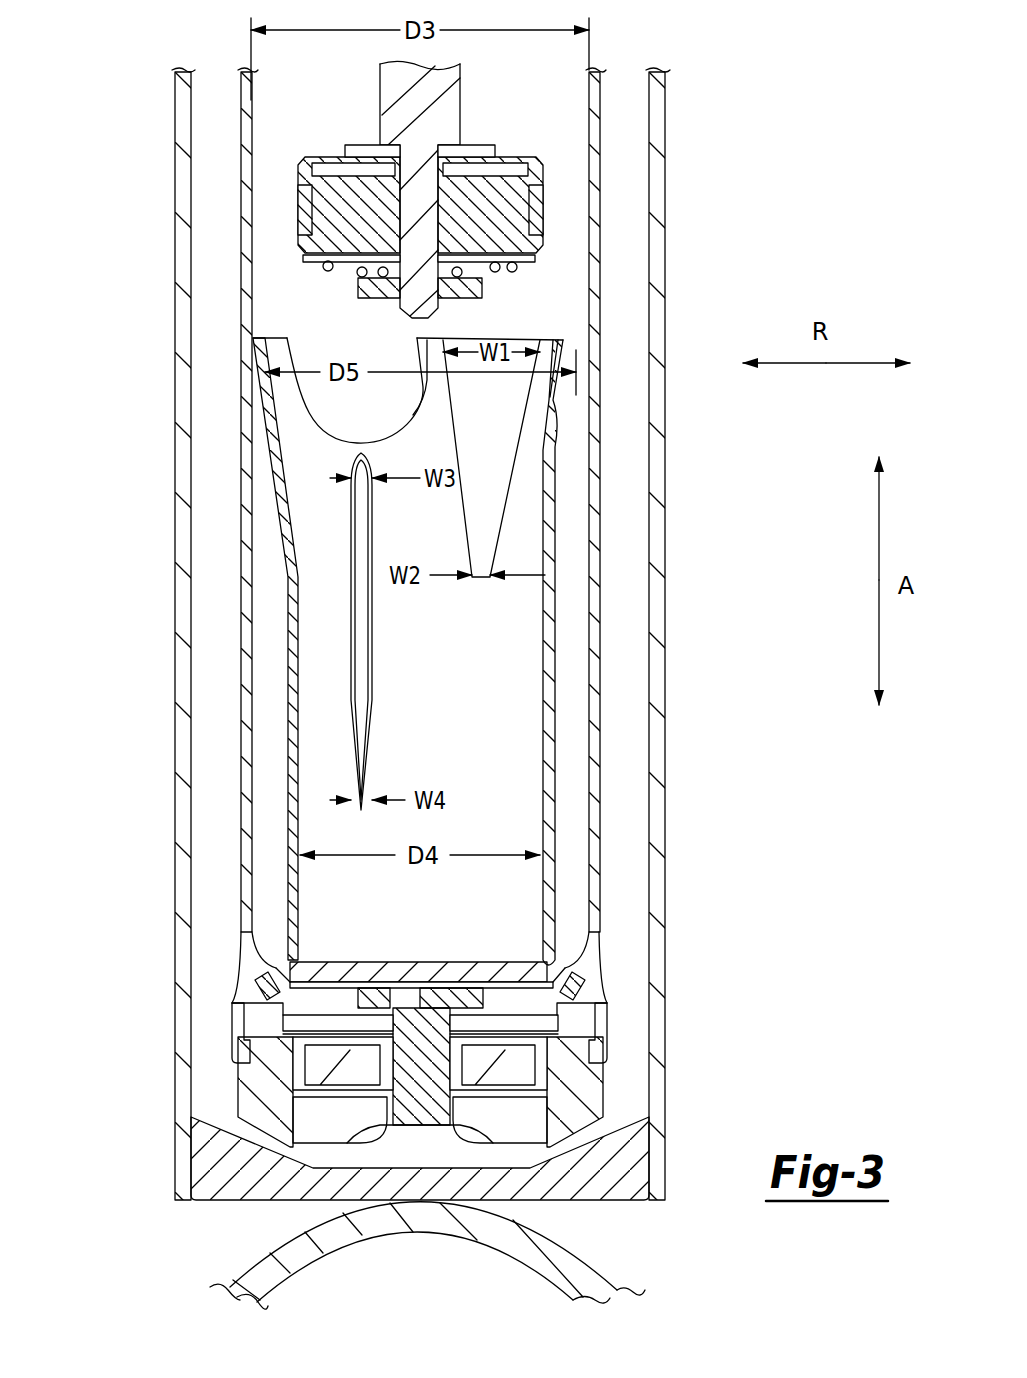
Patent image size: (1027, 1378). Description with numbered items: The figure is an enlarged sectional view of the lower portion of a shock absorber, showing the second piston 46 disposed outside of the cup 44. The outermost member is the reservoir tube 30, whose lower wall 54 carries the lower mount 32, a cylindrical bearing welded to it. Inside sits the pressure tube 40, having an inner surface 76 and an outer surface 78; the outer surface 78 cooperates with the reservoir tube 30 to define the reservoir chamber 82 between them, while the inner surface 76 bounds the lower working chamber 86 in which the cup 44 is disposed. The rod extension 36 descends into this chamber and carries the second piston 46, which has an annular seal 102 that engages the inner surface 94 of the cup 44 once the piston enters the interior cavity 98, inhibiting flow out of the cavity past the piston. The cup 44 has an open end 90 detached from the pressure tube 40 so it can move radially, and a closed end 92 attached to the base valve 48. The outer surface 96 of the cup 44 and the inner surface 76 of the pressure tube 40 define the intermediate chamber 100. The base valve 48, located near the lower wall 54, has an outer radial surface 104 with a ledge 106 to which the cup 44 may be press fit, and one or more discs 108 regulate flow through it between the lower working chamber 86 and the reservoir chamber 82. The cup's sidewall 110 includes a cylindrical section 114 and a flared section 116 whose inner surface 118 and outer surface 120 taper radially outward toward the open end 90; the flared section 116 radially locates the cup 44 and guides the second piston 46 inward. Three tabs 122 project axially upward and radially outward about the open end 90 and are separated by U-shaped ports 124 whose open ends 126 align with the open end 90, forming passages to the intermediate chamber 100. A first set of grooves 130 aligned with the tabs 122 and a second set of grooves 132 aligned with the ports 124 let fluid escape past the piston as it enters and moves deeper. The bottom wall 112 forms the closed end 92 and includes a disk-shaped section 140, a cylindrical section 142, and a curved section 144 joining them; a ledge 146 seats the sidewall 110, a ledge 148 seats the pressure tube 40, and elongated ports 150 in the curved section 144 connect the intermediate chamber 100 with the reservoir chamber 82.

The reservoir tube 30 is at (172, 289).
The lower mount 32 is at (255, 1268).
The rod extension 36 is at (447, 104).
The pressure tube 40 is at (600, 268).
The cup 44 is at (558, 633).
The second piston 46 is at (288, 160).
The base valve 48 is at (606, 1080).
The lower wall 54 is at (232, 1150).
The inner surface 76 is at (586, 80).
The outer surface 78 is at (600, 145).
The reservoir chamber 82 is at (205, 209).
The lower working chamber 86 is at (292, 107).
The open end 90 is at (428, 352).
The closed end 92 is at (445, 982).
The inner surface 94 is at (545, 732).
The outer surface 96 is at (555, 783).
The interior cavity 98 is at (452, 733).
The intermediate chamber 100 is at (565, 832).
The annular seal 102 is at (545, 205).
The outer radial surface 104 is at (604, 1105).
The ledge 106 is at (232, 1050).
The discs 108 is at (300, 1000).
The sidewall 110 is at (280, 582).
The bottom wall 112 is at (336, 958).
The cylindrical section 114 is at (292, 687).
The flared section 116 is at (262, 418).
The inner surface 118 is at (292, 465).
The outer surface 120 is at (277, 481).
The tabs 122 is at (255, 340).
The ports 124 is at (378, 441).
The open ends 126 is at (338, 352).
The first set of grooves 130 is at (497, 467).
The second set of grooves 132 is at (355, 628).
The disk-shaped section 140 is at (378, 978).
The cylindrical section 142 is at (607, 1035).
The curved section 144 is at (262, 984).
The ledge 146 is at (566, 965).
The ledge 148 is at (602, 992).
The ports 150 is at (520, 996).